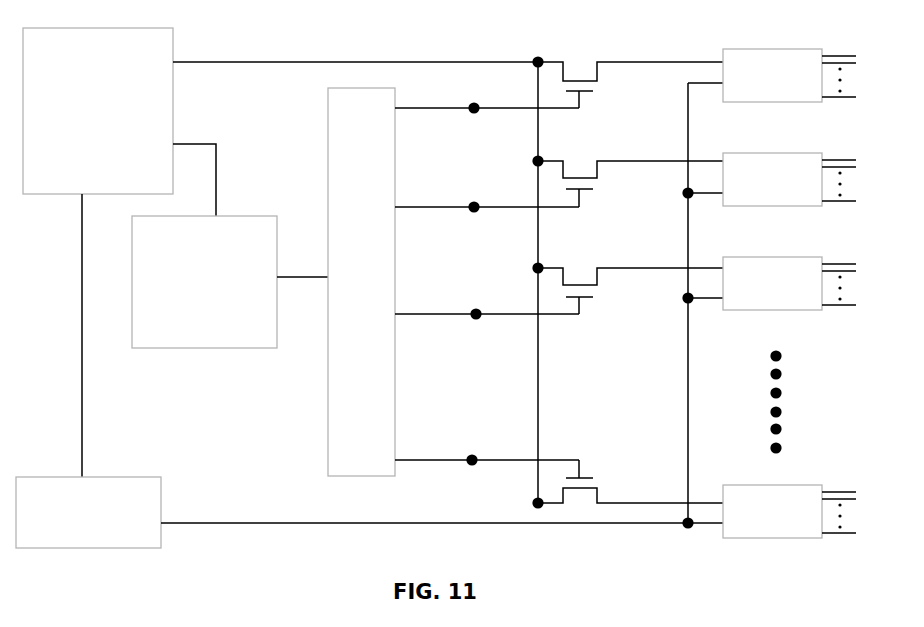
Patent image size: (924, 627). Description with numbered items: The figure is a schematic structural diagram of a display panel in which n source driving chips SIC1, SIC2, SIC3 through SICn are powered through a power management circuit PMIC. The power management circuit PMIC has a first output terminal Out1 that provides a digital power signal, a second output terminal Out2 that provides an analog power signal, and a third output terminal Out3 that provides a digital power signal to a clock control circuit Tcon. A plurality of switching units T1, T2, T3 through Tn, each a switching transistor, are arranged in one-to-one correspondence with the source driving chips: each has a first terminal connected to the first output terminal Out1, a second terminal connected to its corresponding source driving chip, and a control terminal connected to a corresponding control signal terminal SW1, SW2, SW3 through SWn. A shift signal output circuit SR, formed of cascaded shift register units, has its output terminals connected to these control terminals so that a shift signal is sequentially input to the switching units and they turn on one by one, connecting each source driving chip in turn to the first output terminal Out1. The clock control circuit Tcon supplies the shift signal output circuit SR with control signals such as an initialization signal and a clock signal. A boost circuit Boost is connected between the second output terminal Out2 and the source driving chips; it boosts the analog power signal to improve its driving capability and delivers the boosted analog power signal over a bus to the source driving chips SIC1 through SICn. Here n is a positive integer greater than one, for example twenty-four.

The power management circuit PMIC is at (98, 111).
The first output terminal Out1 is at (327, 62).
The second output terminal Out2 is at (83, 320).
The third output terminal Out3 is at (167, 174).
The clock control circuit Tcon is at (230, 282).
The shift signal output circuit SR is at (361, 282).
The boost circuit Boost is at (369, 512).
The switching unit T1 is at (630, 71).
The switching unit T2 is at (630, 166).
The switching unit T3 is at (630, 278).
The switching unit Tn is at (630, 481).
The control signal terminal SW1 is at (487, 96).
The control signal terminal SW2 is at (487, 191).
The control signal terminal SW3 is at (487, 298).
The control signal terminal SWn is at (487, 442).
The source driving chip SIC1 is at (789, 75).
The source driving chip SIC2 is at (789, 179).
The source driving chip SIC3 is at (789, 283).
The source driving chip SICn is at (789, 511).